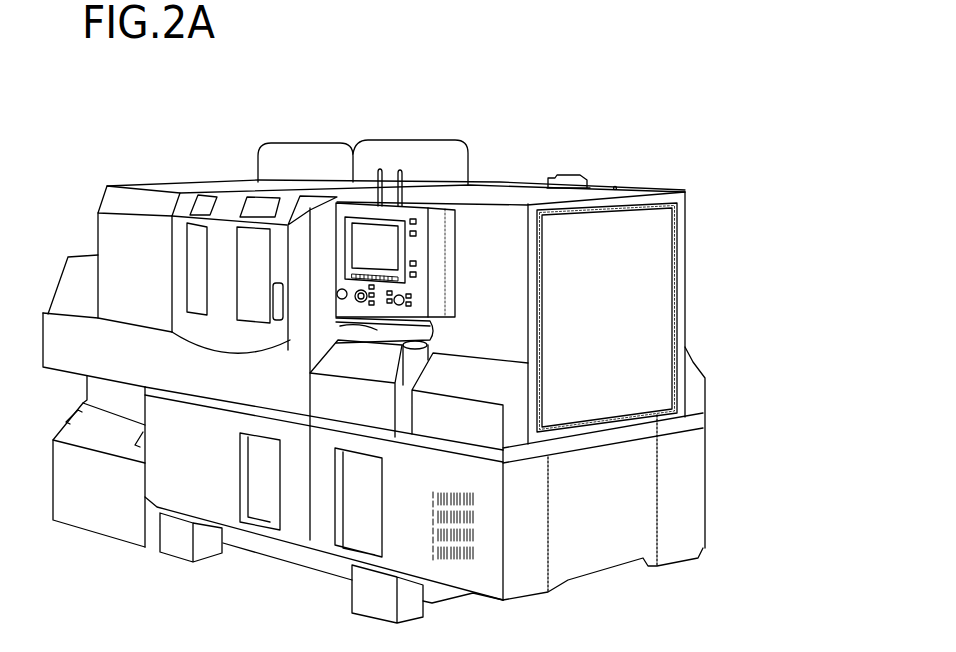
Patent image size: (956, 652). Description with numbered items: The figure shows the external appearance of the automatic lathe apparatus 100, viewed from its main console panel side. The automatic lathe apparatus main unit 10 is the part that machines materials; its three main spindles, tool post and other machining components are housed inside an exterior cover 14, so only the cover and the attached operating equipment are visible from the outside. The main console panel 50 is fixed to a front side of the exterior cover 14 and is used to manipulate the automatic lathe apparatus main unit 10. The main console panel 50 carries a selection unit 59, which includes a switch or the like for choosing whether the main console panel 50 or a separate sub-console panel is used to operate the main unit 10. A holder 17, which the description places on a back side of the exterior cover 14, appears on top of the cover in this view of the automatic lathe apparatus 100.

The automatic lathe apparatus 100 is at (648, 137).
The automatic lathe apparatus main unit 10 is at (643, 328).
The exterior cover 14 is at (478, 257).
The holder 17 is at (577, 175).
The main console panel 50 is at (427, 223).
The selection unit 59 is at (420, 270).